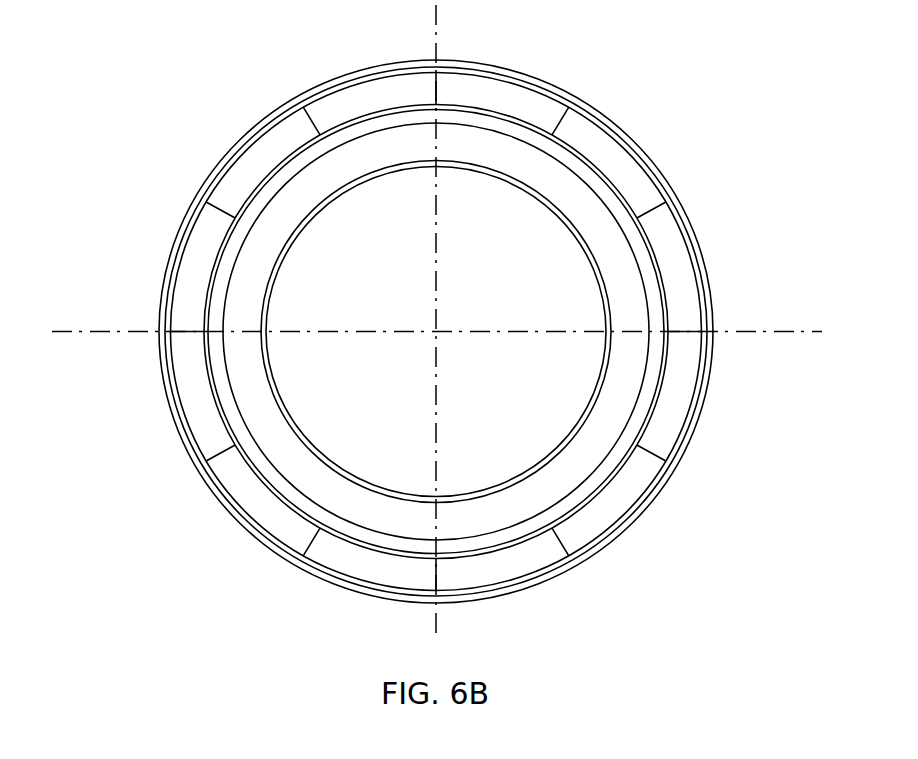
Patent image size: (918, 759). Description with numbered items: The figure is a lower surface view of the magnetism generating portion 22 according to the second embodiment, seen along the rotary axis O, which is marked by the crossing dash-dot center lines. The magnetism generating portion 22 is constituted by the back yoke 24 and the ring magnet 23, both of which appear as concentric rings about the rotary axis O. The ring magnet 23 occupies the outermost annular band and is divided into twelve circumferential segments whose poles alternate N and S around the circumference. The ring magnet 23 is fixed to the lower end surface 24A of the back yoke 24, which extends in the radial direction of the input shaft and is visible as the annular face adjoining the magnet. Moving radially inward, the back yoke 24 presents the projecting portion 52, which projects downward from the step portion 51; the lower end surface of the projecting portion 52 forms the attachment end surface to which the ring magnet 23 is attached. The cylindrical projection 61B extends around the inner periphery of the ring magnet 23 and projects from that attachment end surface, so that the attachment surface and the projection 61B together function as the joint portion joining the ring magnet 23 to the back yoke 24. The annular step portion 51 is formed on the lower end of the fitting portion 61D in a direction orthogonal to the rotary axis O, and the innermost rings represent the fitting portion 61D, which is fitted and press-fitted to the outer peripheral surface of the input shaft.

The magnetism generating portion 22 is at (697, 177).
The back yoke 24 is at (217, 163).
The ring magnet 23 is at (193, 218).
The lower end surface 24A is at (305, 162).
The projecting portion 52 is at (242, 228).
The step portion 51 is at (240, 310).
The projection 61B is at (197, 350).
The fitting portion 61D is at (284, 408).
The rotary axis O is at (437, 331).